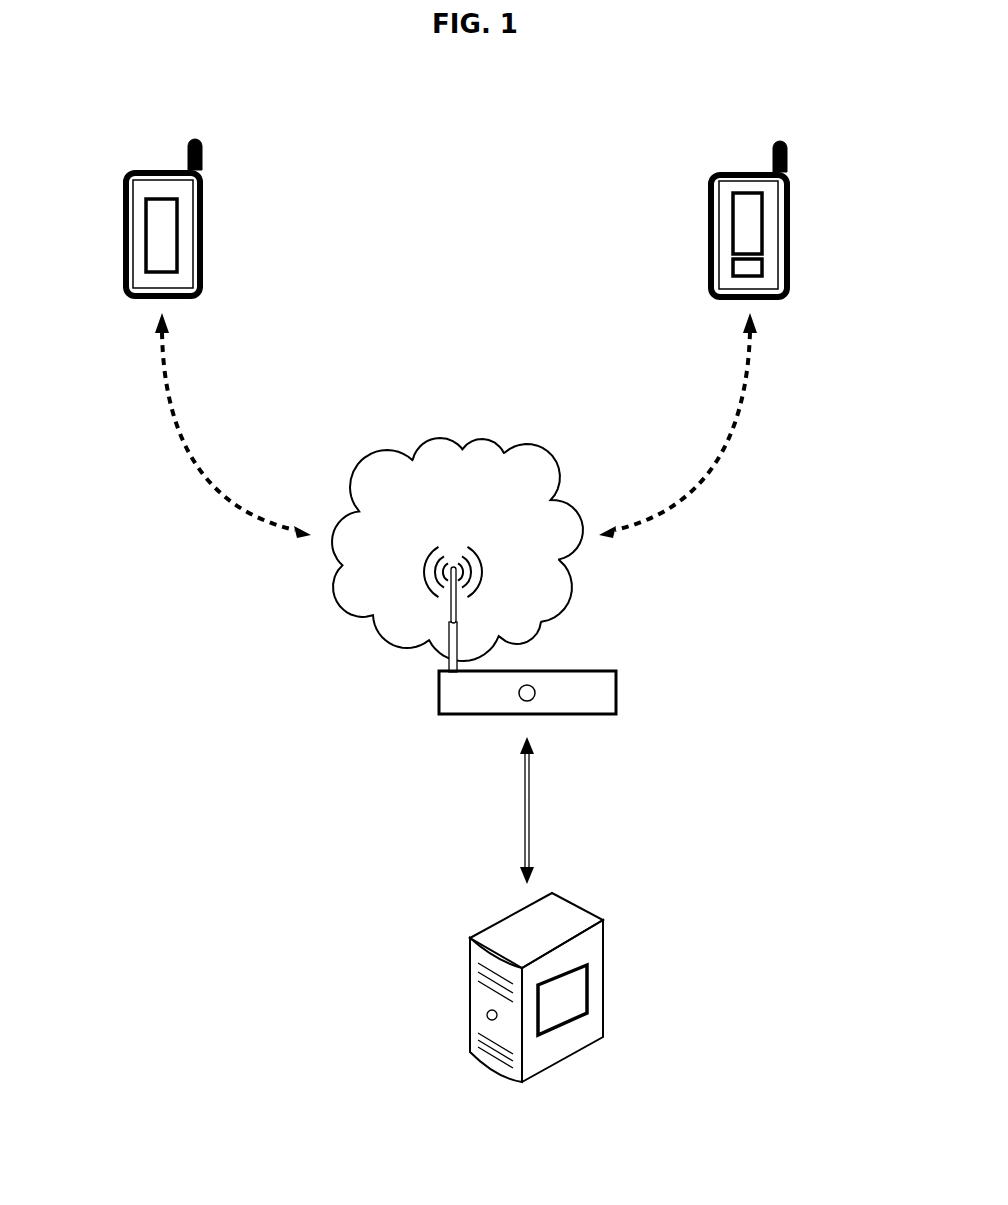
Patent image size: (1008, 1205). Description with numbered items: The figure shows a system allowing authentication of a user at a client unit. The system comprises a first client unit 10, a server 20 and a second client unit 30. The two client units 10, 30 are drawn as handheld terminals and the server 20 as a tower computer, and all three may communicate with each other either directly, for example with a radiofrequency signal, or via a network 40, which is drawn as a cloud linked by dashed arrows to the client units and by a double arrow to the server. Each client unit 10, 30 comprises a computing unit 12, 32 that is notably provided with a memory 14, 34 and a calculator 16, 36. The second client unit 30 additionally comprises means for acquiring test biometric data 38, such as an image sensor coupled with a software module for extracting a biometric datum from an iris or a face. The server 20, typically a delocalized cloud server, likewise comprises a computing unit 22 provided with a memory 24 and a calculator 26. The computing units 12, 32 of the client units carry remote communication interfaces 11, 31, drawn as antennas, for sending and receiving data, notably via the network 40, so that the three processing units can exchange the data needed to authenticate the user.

The first client unit 10 is at (171, 212).
The remote communication interface 11 is at (202, 160).
The computing unit 12 is at (227, 235).
The memory 14 is at (161, 235).
The calculator 16 is at (160, 233).
The server 20 is at (616, 987).
The computing unit 22 is at (650, 1001).
The memory 24 is at (562, 1000).
The calculator 26 is at (568, 1010).
The second client unit 30 is at (759, 212).
The remote communication interface 31 is at (789, 160).
The computing unit 32 is at (814, 223).
The memory 34 is at (747, 223).
The calculator 36 is at (750, 222).
The means for acquiring test biometric data 38 is at (750, 265).
The network 40 is at (466, 528).